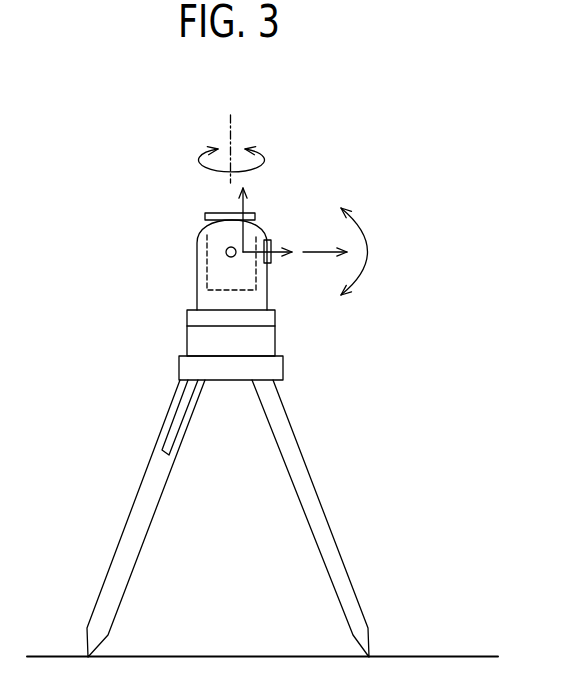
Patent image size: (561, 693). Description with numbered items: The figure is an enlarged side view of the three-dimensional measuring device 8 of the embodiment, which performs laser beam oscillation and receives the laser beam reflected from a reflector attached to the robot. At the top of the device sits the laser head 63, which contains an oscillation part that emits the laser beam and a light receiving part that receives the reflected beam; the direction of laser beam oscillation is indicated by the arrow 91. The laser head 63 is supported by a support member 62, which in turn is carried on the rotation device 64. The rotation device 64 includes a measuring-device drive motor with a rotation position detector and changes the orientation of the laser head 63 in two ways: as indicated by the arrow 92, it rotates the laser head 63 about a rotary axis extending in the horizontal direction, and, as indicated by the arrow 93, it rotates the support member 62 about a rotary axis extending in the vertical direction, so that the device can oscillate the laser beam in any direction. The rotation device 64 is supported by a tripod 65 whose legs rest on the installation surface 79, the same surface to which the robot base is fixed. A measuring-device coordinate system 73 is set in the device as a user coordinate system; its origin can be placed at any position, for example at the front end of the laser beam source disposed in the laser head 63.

The three-dimensional measuring device 8 is at (330, 140).
The support member 62 is at (198, 296).
The laser head 63 is at (204, 219).
The rotation device 64 is at (190, 340).
The tripod 65 is at (148, 490).
The measuring-device coordinate system 73 is at (250, 262).
The installation surface 79 is at (448, 656).
The arrow 91 is at (317, 253).
The arrow 92 is at (363, 232).
The arrow 93 is at (203, 168).